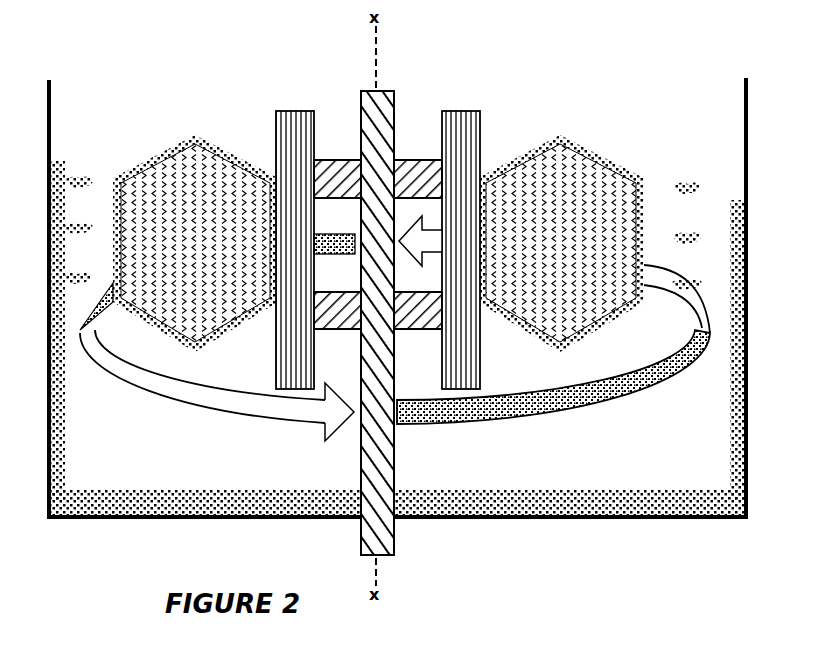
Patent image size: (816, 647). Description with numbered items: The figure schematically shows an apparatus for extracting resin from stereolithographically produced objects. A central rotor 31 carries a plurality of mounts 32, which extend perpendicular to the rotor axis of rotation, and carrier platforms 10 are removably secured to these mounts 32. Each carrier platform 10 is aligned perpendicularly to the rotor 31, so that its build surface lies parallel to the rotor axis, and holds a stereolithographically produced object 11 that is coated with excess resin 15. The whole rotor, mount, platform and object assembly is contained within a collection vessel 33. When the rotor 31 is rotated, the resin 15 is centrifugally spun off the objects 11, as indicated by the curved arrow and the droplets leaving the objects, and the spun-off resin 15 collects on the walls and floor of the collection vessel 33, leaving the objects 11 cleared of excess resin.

The carrier platform 10 is at (378, 250).
The stereolithographically produced object 11 is at (378, 243).
The resin 15 is at (97, 282).
The rotor 31 is at (366, 430).
The mount 32 is at (334, 180).
The collection vessel 33 is at (176, 65).